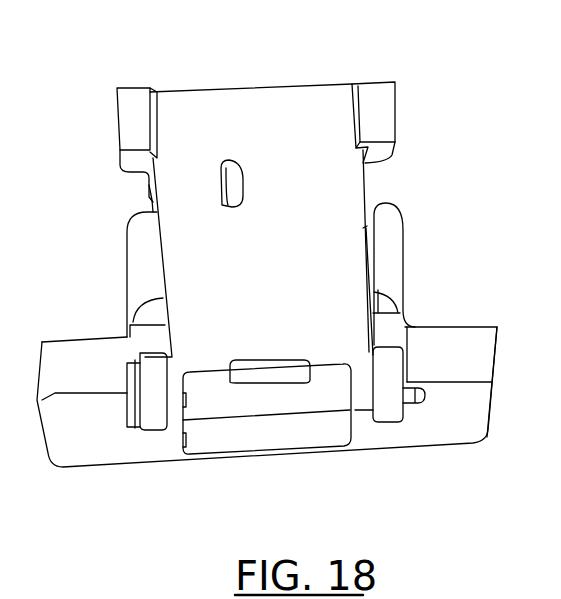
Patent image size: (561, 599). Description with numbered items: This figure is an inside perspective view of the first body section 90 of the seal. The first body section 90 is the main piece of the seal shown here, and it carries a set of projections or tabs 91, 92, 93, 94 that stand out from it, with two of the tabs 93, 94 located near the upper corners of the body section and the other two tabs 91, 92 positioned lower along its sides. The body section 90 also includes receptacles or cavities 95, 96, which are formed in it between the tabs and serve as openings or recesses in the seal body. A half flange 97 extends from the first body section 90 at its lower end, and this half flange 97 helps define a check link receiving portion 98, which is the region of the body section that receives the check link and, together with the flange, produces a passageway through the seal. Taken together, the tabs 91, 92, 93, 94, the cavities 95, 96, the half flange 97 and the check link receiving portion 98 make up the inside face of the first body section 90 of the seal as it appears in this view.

The first body section 90 is at (100, 474).
The projection 91 is at (133, 260).
The projection 92 is at (389, 254).
The projection 93 is at (117, 108).
The projection 94 is at (395, 106).
The receptacle 95 is at (145, 192).
The receptacle 96 is at (380, 194).
The half flange 97 is at (70, 346).
The check link receiving portion 98 is at (295, 104).